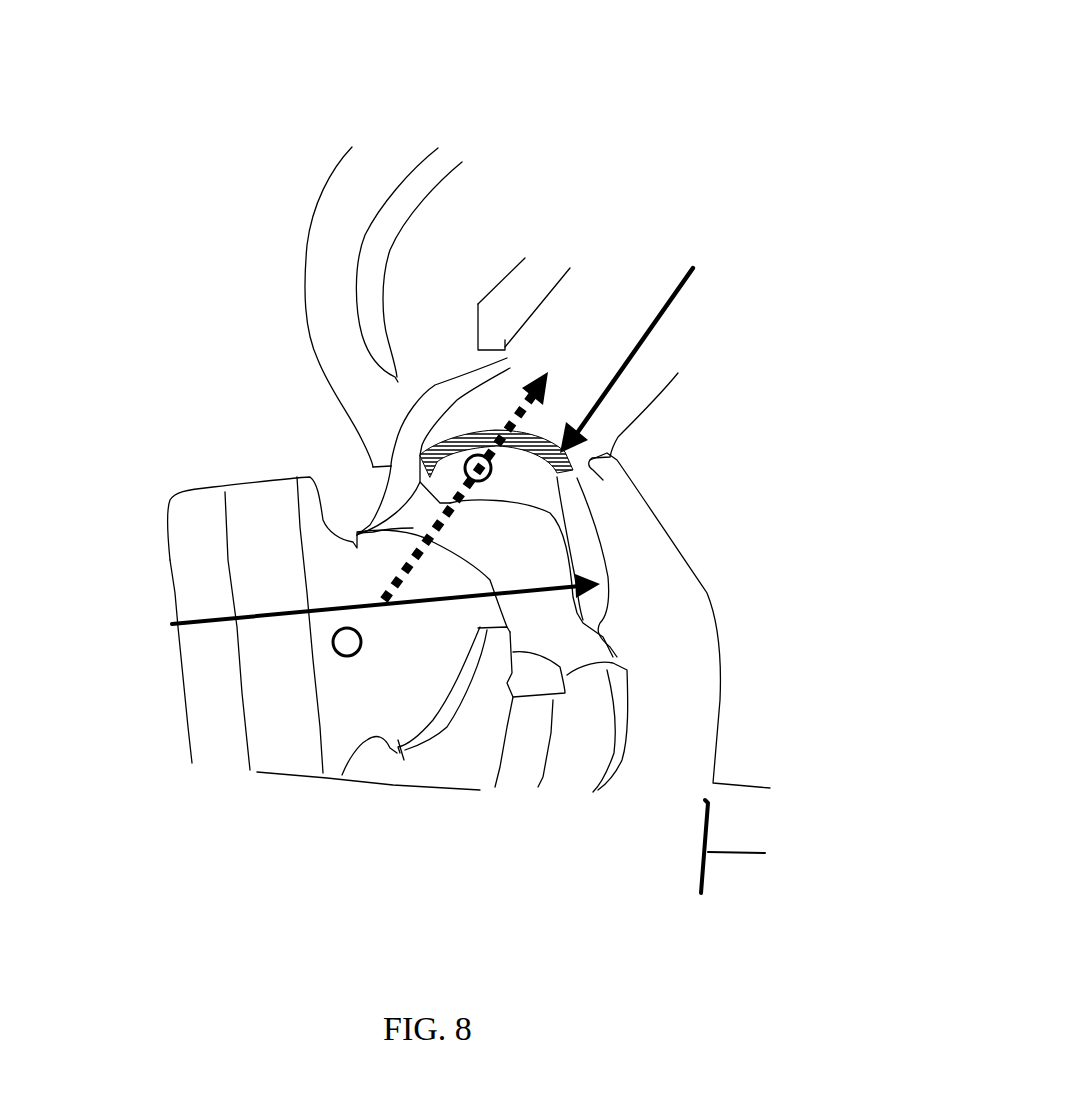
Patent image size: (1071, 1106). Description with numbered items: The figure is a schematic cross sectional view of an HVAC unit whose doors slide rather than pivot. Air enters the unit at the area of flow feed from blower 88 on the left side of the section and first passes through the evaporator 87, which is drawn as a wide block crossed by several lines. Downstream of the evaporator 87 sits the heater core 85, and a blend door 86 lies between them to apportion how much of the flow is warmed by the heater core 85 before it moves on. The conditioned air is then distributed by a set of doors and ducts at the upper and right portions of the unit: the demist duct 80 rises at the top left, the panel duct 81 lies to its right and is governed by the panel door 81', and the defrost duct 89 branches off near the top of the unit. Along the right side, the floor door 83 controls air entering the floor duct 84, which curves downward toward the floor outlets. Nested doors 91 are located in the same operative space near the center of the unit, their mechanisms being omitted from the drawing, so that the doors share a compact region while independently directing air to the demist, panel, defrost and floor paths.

The demist duct 80 is at (390, 158).
The panel door 81' is at (484, 293).
The panel duct 81 is at (603, 297).
The floor door 83 is at (583, 522).
The floor duct 84 is at (735, 655).
The heater core 85 is at (520, 770).
The blend door 86 is at (445, 710).
The evaporator 87 is at (282, 733).
The area of flow feed from blower 88 is at (180, 542).
The defrost duct 89 is at (410, 338).
The nested doors 91 is at (438, 440).